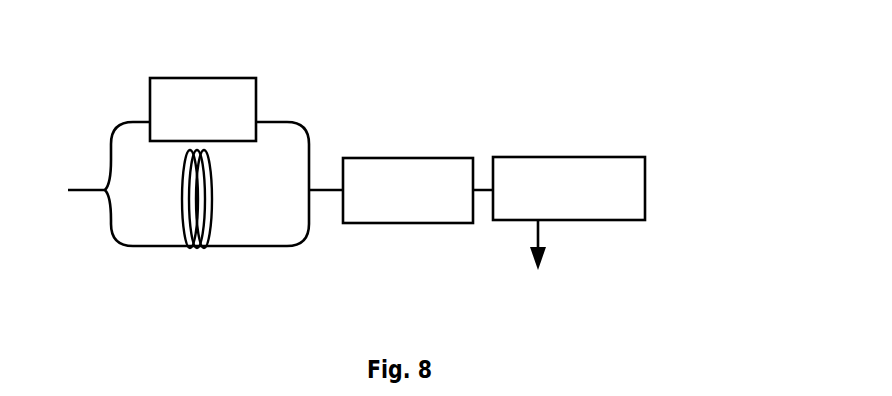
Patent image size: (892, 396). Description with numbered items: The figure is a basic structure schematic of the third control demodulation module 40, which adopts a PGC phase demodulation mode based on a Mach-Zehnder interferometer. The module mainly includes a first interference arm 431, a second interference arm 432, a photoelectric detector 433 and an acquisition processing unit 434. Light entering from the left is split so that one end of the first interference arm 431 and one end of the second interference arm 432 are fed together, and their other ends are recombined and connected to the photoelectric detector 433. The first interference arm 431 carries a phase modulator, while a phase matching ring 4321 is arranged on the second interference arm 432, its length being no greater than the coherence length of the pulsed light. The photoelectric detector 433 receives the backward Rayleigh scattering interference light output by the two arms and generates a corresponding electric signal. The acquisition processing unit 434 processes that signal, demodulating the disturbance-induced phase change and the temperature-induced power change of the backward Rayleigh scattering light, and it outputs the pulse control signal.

The control demodulation module 40 is at (351, 64).
The first interference arm 431 is at (275, 128).
The second interference arm 432 is at (245, 247).
The phase matching ring 4321 is at (212, 197).
The photoelectric detector 433 is at (380, 160).
The acquisition processing unit 434 is at (547, 165).